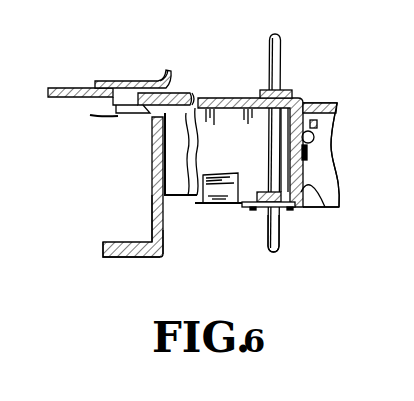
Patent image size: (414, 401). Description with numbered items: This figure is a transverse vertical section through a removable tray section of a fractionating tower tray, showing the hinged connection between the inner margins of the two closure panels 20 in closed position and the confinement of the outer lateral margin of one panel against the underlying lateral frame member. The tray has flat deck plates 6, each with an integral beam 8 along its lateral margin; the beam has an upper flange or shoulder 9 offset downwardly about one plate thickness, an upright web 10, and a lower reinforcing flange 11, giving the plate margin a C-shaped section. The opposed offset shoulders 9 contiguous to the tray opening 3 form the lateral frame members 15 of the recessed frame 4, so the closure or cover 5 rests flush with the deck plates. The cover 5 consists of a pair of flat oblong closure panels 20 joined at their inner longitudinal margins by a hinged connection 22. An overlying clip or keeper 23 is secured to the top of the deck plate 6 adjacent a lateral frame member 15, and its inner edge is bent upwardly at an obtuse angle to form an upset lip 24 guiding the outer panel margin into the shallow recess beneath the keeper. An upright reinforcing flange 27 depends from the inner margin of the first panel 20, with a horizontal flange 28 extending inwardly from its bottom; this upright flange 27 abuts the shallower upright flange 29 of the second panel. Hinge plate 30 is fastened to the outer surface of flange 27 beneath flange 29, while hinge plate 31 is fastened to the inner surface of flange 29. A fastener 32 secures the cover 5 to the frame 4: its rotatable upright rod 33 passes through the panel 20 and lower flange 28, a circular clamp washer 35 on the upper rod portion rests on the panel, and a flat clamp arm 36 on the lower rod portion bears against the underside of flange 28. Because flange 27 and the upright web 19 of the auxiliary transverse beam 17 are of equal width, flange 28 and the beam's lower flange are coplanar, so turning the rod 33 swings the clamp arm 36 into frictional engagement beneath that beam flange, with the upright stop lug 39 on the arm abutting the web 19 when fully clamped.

The opening 3 is at (163, 183).
The recessed frame 4 is at (337, 197).
The closure or cover 5 is at (235, 97).
The deck plate 6 is at (55, 88).
The beam 8 is at (157, 257).
The upper flange or shoulder 9 is at (117, 117).
The web 10 is at (152, 227).
The lower reinforcing flange 11 is at (103, 257).
The lateral frame member 15 is at (148, 118).
The auxiliary transverse beam 17 is at (340, 207).
The web of auxiliary beam 19 is at (333, 178).
The closure panel 20 is at (205, 97).
The hinged connection 22 is at (337, 143).
The clip or keeper 23 is at (108, 80).
The upset lip 24 is at (165, 70).
The upright reinforcing flange 27 is at (320, 200).
The horizontal flange 28 is at (280, 208).
The upright reinforcing flange of second panel 29 is at (300, 118).
The hinge plate 30 is at (333, 162).
The hinge plate 31 is at (335, 122).
The fastener 32 is at (283, 40).
The rod 33 is at (272, 252).
The clamp member or washer 35 is at (287, 92).
The clamp arm 36 is at (257, 205).
The stop lug 39 is at (225, 200).